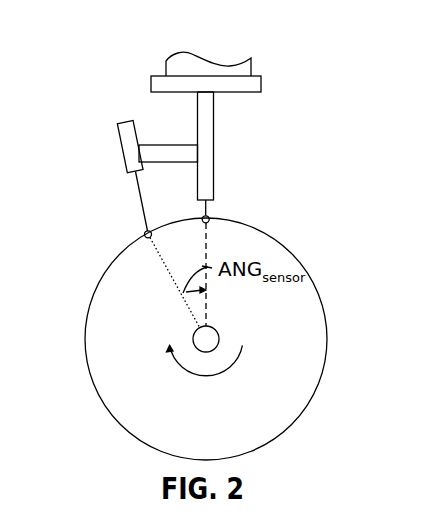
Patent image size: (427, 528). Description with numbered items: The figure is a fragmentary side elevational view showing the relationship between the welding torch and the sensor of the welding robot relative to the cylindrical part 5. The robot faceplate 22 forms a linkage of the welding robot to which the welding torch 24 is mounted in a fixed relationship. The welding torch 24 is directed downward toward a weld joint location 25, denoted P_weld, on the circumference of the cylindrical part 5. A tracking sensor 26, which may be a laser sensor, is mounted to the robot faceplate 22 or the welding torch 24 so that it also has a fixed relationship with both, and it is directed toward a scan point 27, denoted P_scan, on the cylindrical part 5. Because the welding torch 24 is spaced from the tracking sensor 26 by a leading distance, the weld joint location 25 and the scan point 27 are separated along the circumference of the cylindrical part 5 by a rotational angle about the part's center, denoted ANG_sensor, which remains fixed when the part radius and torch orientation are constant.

The cylindrical part 5 is at (305, 267).
The robot faceplate 22 is at (262, 84).
The welding torch 24 is at (214, 152).
The weld joint location 25 is at (209, 217).
The tracking sensor 26 is at (122, 145).
The scan point 27 is at (145, 232).